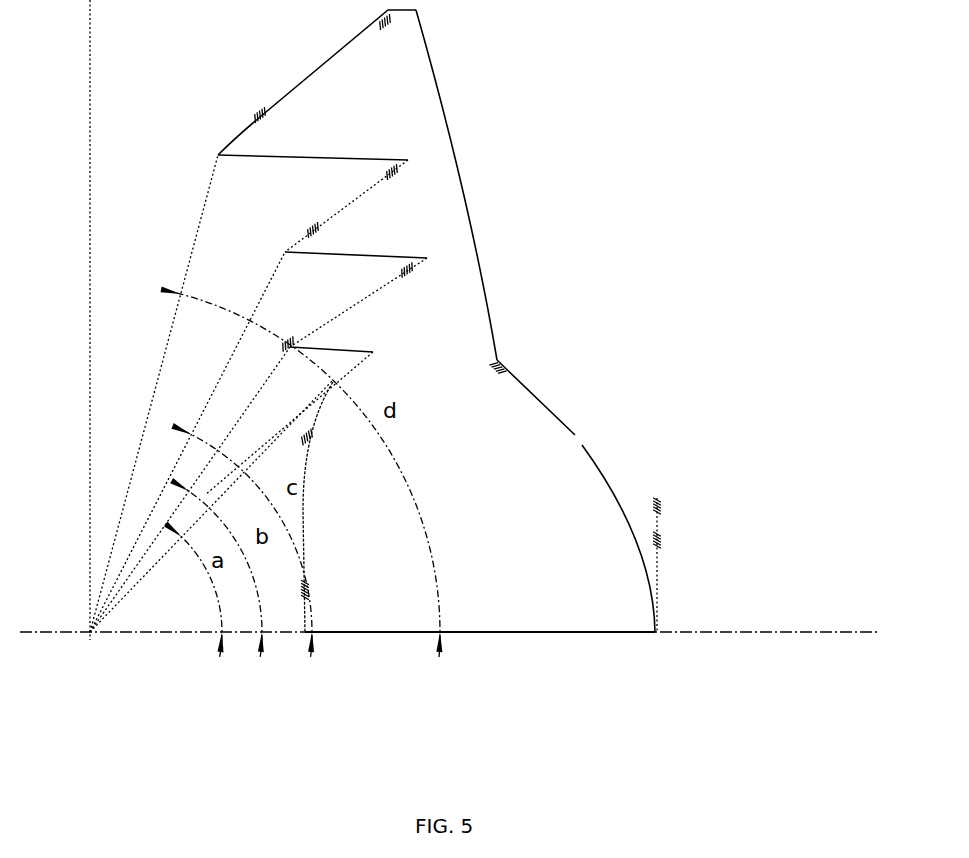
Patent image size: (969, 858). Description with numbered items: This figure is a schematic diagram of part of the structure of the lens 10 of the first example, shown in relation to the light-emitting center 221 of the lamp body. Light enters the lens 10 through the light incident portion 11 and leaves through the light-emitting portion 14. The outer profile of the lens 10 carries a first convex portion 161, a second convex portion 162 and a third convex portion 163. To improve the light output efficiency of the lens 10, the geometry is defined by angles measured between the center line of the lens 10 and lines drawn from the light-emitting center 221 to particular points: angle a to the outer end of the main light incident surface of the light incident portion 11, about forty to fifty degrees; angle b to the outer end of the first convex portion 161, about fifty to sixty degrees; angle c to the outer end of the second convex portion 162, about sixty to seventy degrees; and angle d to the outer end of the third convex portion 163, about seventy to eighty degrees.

The lens 10 is at (512, 558).
The light incident portion 11 is at (308, 572).
The light-emitting portion 14 is at (652, 560).
The first convex portion 161 is at (338, 332).
The second convex portion 162 is at (347, 235).
The third convex portion 163 is at (283, 140).
The light-emitting center 221 is at (91, 634).